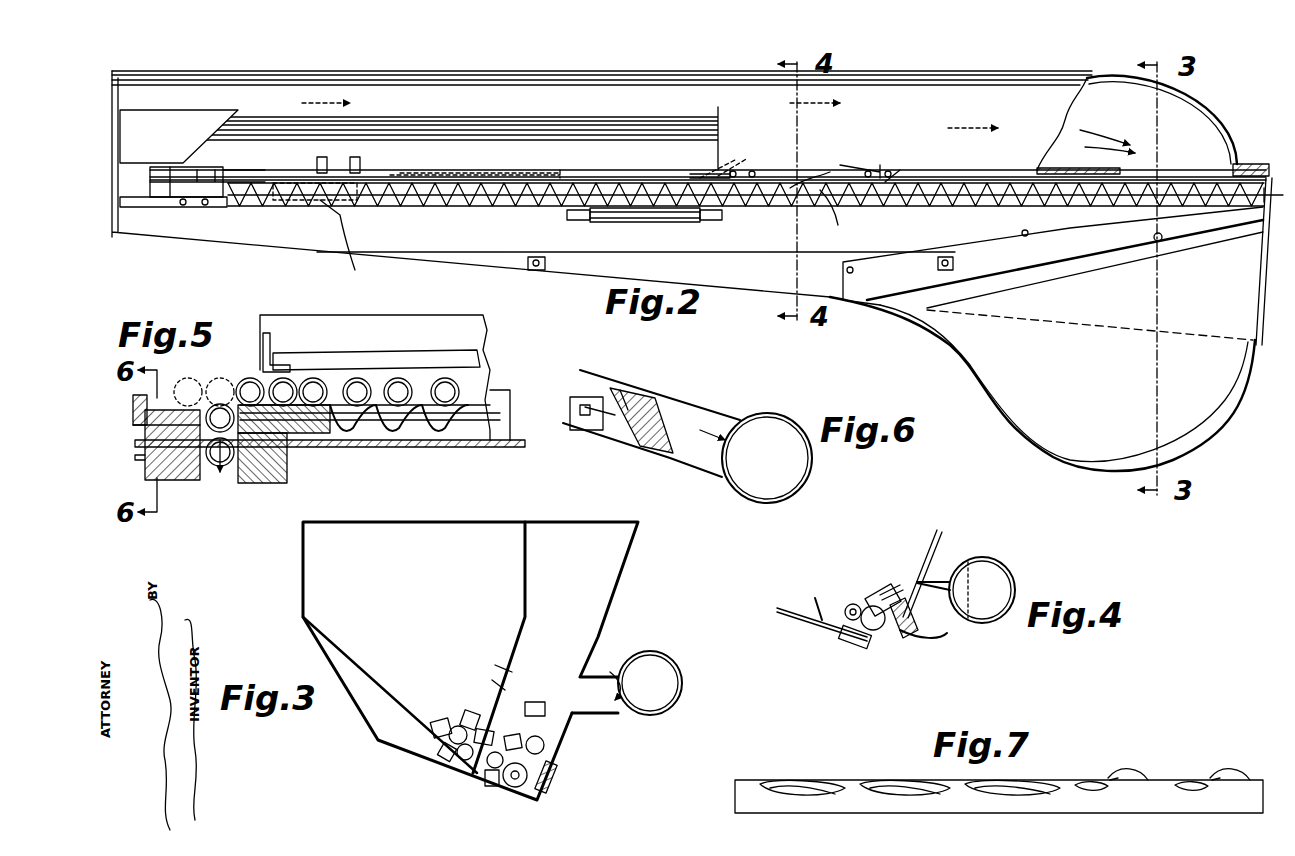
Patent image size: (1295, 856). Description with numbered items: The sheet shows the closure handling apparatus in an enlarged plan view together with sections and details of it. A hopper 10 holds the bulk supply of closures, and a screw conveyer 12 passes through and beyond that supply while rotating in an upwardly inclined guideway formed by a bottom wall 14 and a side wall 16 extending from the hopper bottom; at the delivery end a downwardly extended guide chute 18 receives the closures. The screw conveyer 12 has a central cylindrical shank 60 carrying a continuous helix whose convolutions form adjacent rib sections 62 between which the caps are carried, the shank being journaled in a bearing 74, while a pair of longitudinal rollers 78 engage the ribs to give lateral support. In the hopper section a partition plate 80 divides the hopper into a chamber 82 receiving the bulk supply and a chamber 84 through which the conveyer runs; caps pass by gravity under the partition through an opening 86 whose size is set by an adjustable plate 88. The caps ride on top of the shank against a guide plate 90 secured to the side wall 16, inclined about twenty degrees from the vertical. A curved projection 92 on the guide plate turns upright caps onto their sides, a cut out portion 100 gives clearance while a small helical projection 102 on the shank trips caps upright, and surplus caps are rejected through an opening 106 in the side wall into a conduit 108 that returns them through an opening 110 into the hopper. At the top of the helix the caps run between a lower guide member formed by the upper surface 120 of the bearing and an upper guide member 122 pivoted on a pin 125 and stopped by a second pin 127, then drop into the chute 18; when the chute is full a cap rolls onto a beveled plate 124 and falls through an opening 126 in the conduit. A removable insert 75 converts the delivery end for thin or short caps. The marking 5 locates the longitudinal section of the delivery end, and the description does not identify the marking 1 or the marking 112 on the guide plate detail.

In FIG. 2, the machine 1 is at (266, 284).
In FIG. 2, the section line 5 is at (150, 200).
In FIG. 2, the hopper 10 is at (1198, 425).
In FIG. 3, the hopper 10 is at (300, 567).
In FIG. 2, the screw conveyer 12 is at (935, 212).
In FIG. 3, the screw conveyer 12 is at (510, 790).
In FIG. 4, the screw conveyer 12 is at (880, 630).
In FIG. 2, the bottom wall 14 is at (580, 270).
In FIG. 5, the bottom wall 14 is at (440, 448).
In FIG. 6, the bottom wall 14 is at (615, 460).
In FIG. 3, the bottom wall 14 is at (480, 790).
In FIG. 4, the bottom wall 14 is at (815, 627).
In FIG. 2, the side wall 16 is at (1005, 170).
In FIG. 5, the side wall 16 is at (475, 335).
In FIG. 3, the side wall 16 is at (560, 745).
In FIG. 4, the side wall 16 is at (940, 540).
In FIG. 5, the guide chute 18 is at (215, 515).
In FIG. 5, the shank 60 is at (470, 425).
In FIG. 5, the rib sections 62 is at (400, 380).
In FIG. 2, the bearing 74 is at (215, 207).
In FIG. 5, the bearing 74 is at (300, 440).
In FIG. 2, the insert 75 is at (240, 170).
In FIG. 2, the longitudinal rollers 78 is at (630, 222).
In FIG. 4, the longitudinal rollers 78 is at (850, 605).
In FIG. 2, the partition plate 80 is at (1040, 275).
In FIG. 3, the partition plate 80 is at (522, 560).
In FIG. 3, the chamber 82 is at (418, 598).
In FIG. 3, the chamber 84 is at (563, 573).
In FIG. 3, the opening 86 is at (460, 785).
In FIG. 2, the adjustable plate 88 is at (1130, 242).
In FIG. 3, the adjustable plate 88 is at (525, 640).
In FIG. 2, the guide plate 90 is at (945, 172).
In FIG. 5, the guide plate 90 is at (490, 395).
In FIG. 6, the guide plate 90 is at (625, 400).
In FIG. 3, the guide plate 90 is at (555, 770).
In FIG. 4, the guide plate 90 is at (905, 618).
In FIG. 7, the guide plate 90 is at (887, 806).
In FIG. 2, the curved projection 92 is at (743, 172).
In FIG. 4, the curved projection 92 is at (885, 592).
In FIG. 7, the curved projection 92 is at (1128, 775).
In FIG. 2, the cut out portion 100 is at (700, 170).
In FIG. 7, the cut out portion 100 is at (1090, 783).
In FIG. 2, the helical projection 102 is at (843, 218).
In FIG. 2, the opening 106 is at (810, 170).
In FIG. 4, the opening 106 is at (908, 585).
In FIG. 2, the conduit 108 is at (605, 71).
In FIG. 6, the conduit 108 is at (812, 475).
In FIG. 3, the conduit 108 is at (670, 655).
In FIG. 4, the conduit 108 is at (1010, 568).
In FIG. 2, the opening 110 is at (1210, 150).
In FIG. 3, the opening 110 is at (572, 694).
In FIG. 2, the slot 112 is at (510, 172).
In FIG. 7, the slot 112 is at (815, 783).
In FIG. 5, the upper surface 120 is at (290, 380).
In FIG. 2, the upper guide member 122 is at (310, 200).
In FIG. 5, the upper guide member 122 is at (335, 375).
In FIG. 2, the beveled plate 124 is at (145, 165).
In FIG. 5, the beveled plate 124 is at (160, 410).
In FIG. 6, the beveled plate 124 is at (660, 400).
In FIG. 2, the pin 125 is at (360, 210).
In FIG. 2, the opening 126 is at (200, 95).
In FIG. 2, the second pin 127 is at (356, 245).